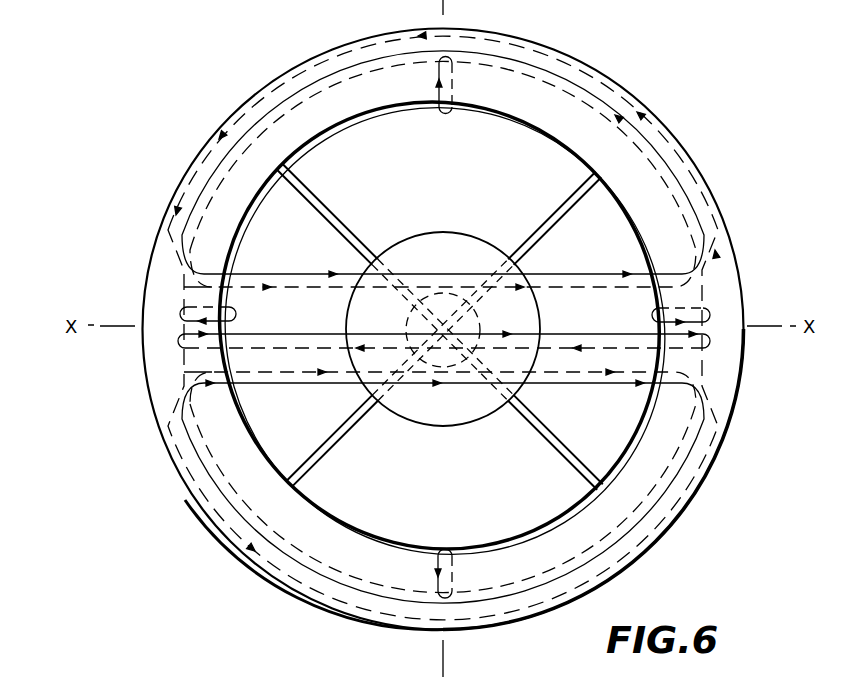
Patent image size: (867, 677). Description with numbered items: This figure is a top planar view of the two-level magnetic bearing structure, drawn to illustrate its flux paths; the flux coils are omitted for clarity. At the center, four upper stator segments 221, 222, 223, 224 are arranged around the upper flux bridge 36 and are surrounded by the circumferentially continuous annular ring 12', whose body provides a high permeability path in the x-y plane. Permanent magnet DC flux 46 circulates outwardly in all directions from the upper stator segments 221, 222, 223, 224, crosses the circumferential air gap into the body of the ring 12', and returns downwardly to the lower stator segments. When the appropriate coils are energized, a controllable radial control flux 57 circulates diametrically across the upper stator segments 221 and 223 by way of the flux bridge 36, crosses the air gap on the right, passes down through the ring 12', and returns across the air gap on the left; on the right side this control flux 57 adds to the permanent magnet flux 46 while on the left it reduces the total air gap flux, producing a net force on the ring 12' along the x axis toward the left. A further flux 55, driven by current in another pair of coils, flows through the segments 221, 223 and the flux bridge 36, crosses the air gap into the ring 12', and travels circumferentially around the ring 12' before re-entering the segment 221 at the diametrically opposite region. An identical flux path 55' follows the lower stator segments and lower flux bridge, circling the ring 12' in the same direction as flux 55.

The annular ring 12' is at (469, 329).
The flux path 55 is at (443, 327).
The flux path 55' is at (444, 321).
The permanent magnet flux path 46 is at (447, 545).
The radial control flux path 57 is at (605, 333).
The flux bridge 36 is at (462, 242).
The upper stator segment 221 is at (310, 205).
The upper stator segment 222 is at (483, 122).
The upper stator segment 223 is at (577, 217).
The upper stator segment 224 is at (338, 447).